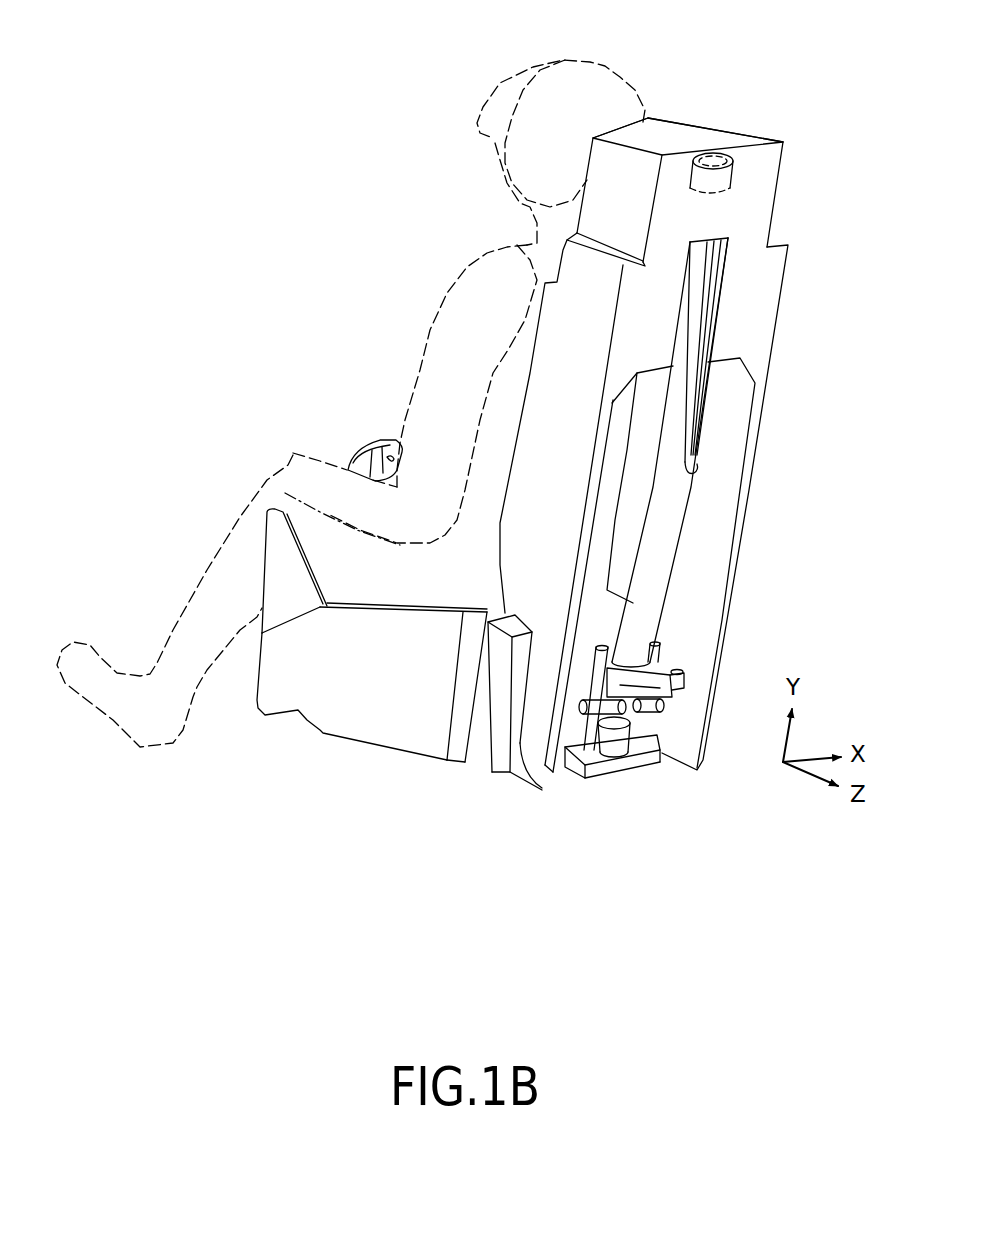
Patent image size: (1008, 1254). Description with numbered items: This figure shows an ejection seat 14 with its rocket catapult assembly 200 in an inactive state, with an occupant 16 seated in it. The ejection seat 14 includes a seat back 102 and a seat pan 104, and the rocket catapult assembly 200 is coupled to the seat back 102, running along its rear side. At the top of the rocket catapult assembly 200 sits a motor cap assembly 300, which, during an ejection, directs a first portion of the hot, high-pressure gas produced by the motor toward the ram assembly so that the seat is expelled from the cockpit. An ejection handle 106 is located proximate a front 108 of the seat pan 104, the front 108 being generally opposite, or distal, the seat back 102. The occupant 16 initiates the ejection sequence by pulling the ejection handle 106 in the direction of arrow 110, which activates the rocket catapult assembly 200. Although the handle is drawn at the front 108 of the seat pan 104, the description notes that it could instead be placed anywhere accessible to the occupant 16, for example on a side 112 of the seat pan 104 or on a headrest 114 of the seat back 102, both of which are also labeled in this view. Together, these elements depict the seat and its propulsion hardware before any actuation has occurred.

The ejection seat 14 is at (563, 413).
The occupant 16 is at (638, 68).
The seat back 102 is at (660, 334).
The seat pan 104 is at (399, 659).
The ejection handle 106 is at (341, 450).
The front 108 is at (372, 592).
The arrow 110 is at (373, 437).
The side 112 is at (395, 689).
The headrest 114 is at (675, 130).
The rocket catapult assembly 200 is at (706, 404).
The motor cap assembly 300 is at (738, 160).